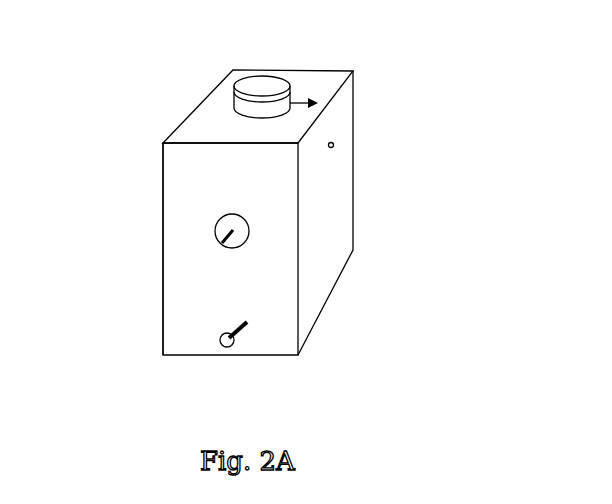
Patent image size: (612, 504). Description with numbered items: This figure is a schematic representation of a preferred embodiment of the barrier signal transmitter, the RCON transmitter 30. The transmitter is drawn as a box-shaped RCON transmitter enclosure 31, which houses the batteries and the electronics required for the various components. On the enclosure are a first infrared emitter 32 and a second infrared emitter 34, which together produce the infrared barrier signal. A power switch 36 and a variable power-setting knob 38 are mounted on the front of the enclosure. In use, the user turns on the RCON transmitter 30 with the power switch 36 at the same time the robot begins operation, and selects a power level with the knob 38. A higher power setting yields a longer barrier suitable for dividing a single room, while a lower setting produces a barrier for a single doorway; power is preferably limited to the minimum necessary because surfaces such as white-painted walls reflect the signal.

The RCON transmitter 30 is at (177, 87).
The RCON transmitter enclosure 31 is at (163, 175).
The first infrared emitter 32 is at (338, 142).
The second infrared emitter 34 is at (268, 105).
The power switch 36 is at (237, 342).
The variable power-setting knob 38 is at (216, 224).